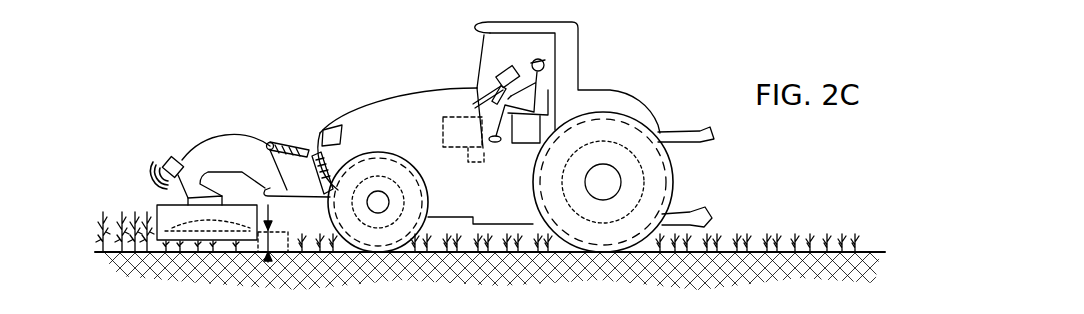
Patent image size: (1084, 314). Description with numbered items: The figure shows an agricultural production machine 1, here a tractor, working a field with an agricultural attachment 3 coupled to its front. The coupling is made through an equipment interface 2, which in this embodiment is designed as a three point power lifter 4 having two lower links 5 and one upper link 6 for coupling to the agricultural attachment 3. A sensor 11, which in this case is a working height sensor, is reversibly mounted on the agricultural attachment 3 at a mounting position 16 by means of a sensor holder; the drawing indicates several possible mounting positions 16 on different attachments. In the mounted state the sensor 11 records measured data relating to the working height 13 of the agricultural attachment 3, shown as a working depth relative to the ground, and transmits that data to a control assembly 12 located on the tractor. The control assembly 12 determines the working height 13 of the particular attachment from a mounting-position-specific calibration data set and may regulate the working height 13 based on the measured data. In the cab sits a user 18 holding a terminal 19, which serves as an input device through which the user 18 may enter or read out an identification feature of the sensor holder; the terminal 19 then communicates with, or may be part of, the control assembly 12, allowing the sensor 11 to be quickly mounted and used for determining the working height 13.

The agricultural production machine 1 is at (516, 128).
The equipment interface 2 is at (301, 131).
The agricultural attachment 3 is at (233, 153).
The three point power lifter 4 is at (301, 131).
The lower links 5 is at (278, 231).
The upper link 6 is at (292, 146).
The sensor 11 is at (135, 170).
The control assembly 12 is at (409, 85).
The working height 13 is at (268, 263).
The mounting position 16 is at (129, 139).
The user 18 is at (543, 90).
The terminal 19 is at (500, 70).